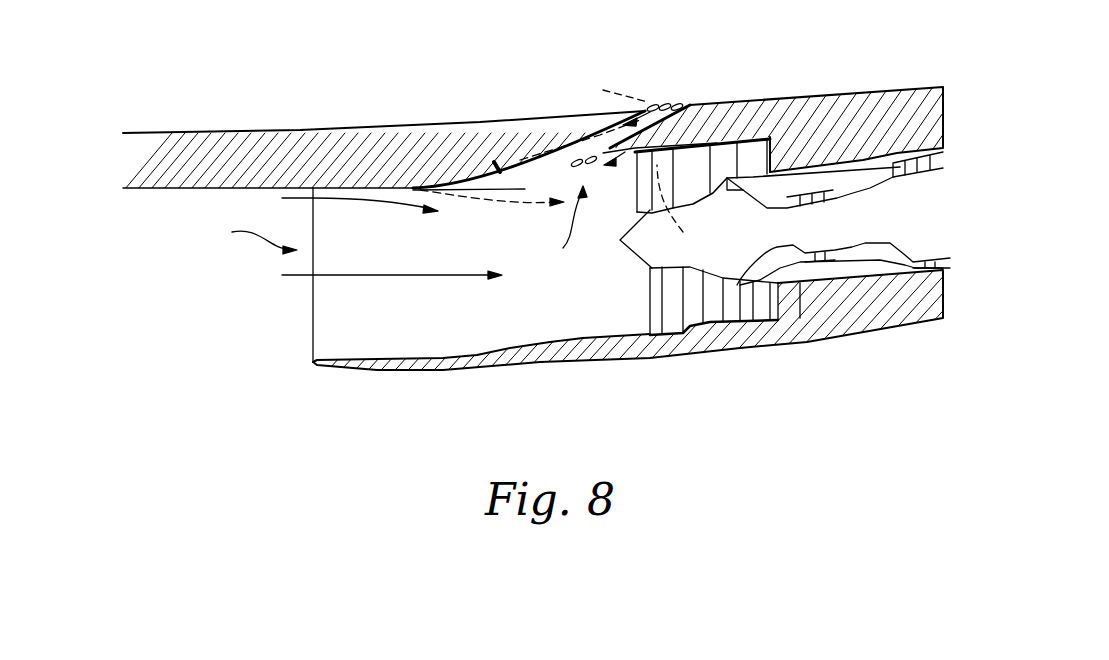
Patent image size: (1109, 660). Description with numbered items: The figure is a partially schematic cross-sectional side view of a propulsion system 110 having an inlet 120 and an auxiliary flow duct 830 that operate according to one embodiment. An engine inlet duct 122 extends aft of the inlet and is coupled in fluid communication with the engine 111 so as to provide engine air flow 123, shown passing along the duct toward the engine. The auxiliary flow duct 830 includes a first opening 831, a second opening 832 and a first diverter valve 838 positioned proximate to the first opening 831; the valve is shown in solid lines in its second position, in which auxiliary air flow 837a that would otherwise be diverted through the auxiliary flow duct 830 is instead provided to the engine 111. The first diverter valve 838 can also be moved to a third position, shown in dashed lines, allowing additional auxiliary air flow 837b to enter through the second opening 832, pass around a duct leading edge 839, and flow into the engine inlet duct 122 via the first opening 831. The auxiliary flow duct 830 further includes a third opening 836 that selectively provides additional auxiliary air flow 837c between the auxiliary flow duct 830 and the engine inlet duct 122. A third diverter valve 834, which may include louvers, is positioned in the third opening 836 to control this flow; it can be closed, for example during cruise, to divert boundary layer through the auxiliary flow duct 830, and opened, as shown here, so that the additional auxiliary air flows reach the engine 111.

The propulsion system 110 is at (752, 368).
The engine 111 is at (770, 300).
The inlet 120 is at (241, 238).
The engine inlet duct 122 is at (573, 335).
The engine air flow 123 is at (290, 277).
The auxiliary flow duct 830 is at (543, 158).
The first opening 831 is at (460, 197).
The second opening 832 is at (665, 103).
The third diverter valve 834 is at (597, 167).
The third opening 836 is at (563, 234).
The auxiliary air flow 837a is at (297, 198).
The additional auxiliary air flow 837b is at (512, 112).
The additional auxiliary air flow 837c is at (699, 205).
The first diverter valve 838 is at (500, 172).
The duct leading edge 839 is at (533, 192).